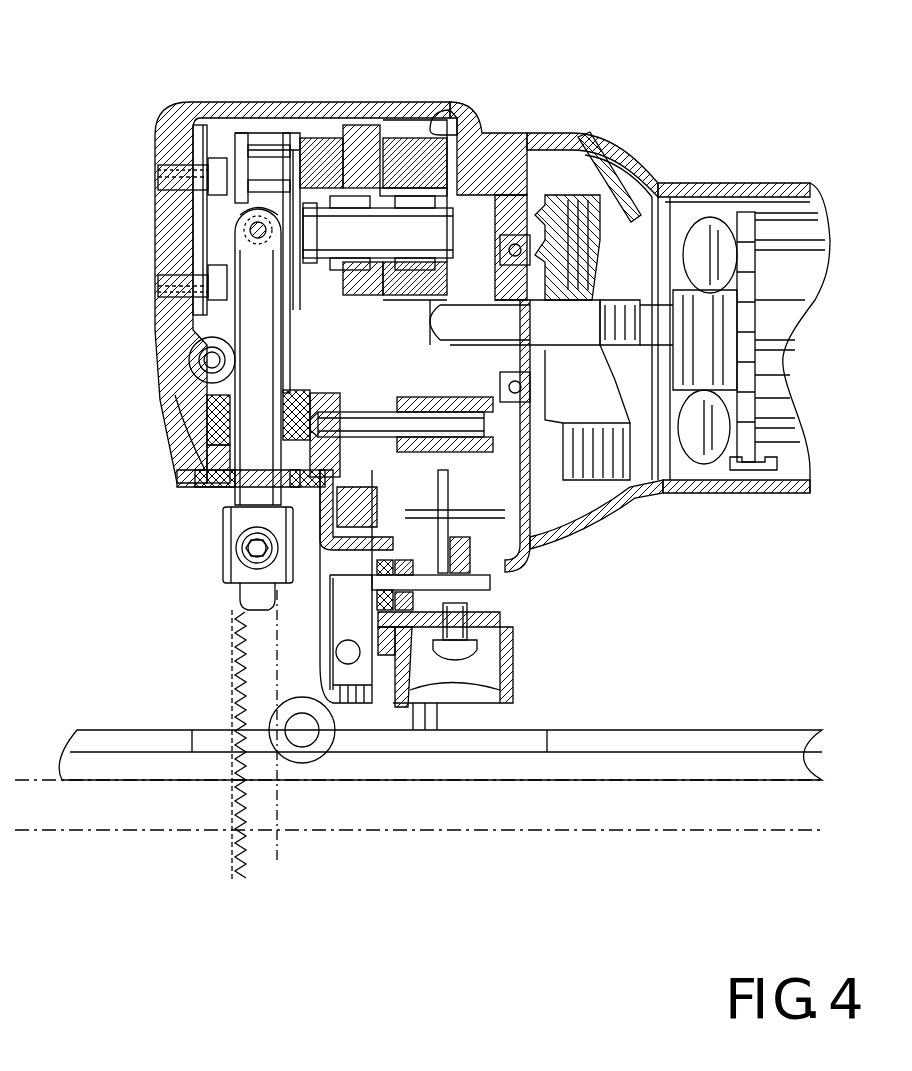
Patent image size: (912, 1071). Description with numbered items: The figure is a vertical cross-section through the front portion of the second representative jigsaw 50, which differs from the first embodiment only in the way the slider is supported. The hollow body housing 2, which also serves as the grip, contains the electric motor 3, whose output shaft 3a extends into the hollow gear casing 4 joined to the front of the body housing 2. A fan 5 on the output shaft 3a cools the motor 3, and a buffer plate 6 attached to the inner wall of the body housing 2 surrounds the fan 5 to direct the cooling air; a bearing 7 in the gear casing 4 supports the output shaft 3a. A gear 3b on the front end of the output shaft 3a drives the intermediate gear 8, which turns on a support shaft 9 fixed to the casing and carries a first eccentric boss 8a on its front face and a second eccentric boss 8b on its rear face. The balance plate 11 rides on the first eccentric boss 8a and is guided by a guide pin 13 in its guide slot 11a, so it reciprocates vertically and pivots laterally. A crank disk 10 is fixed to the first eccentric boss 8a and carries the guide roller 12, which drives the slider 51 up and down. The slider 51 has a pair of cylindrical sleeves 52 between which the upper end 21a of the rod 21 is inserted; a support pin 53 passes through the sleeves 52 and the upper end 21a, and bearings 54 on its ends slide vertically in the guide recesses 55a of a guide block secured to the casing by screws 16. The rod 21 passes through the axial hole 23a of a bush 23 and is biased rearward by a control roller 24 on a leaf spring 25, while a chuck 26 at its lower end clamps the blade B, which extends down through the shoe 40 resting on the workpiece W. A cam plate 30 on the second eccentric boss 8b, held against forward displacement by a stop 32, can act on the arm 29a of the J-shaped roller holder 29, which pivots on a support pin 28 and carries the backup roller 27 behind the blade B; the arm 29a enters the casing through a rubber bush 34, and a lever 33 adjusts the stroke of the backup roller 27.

The body housing 2 is at (752, 183).
The electric motor 3 is at (772, 440).
The output shaft 3a is at (643, 350).
The gear 3b is at (413, 337).
The gear casing 4 is at (340, 103).
The fan 5 is at (585, 205).
The buffer plate 6 is at (645, 200).
The bearing 7 is at (513, 400).
The intermediate gear 8 is at (418, 165).
The first eccentric boss 8a is at (395, 190).
The second eccentric boss 8b is at (462, 128).
The support shaft 9 is at (395, 228).
The crank disk 10 is at (312, 135).
The balance plate 11 is at (355, 125).
The guide slot 11a is at (380, 483).
The guide roller 12 is at (285, 175).
The guide pin 13 is at (245, 515).
The screws 16 is at (182, 177).
The rod 21 is at (255, 318).
The upper end of the rod 21a is at (248, 205).
The bush 23 is at (195, 445).
The axial hole 23a is at (212, 420).
The control roller 24 is at (178, 385).
The leaf spring 25 is at (189, 363).
The chuck 26 is at (230, 545).
The backup roller 27 is at (285, 694).
The support pin 28 is at (336, 652).
The roller holder 29 is at (340, 745).
The arm 29a is at (505, 642).
The cam plate 30 is at (447, 483).
The stop 32 is at (440, 560).
The lever 33 is at (478, 597).
The rubber bush 34 is at (456, 655).
The shoe 40 is at (688, 742).
The second representative jigsaw 50 is at (514, 120).
The slider 51 is at (205, 140).
The cylindrical sleeves 52 is at (165, 186).
The support pin 53 is at (250, 230).
The bearings 54 is at (165, 275).
The guide recesses 55a is at (278, 140).
The blade B is at (240, 685).
The workpiece W is at (30, 775).